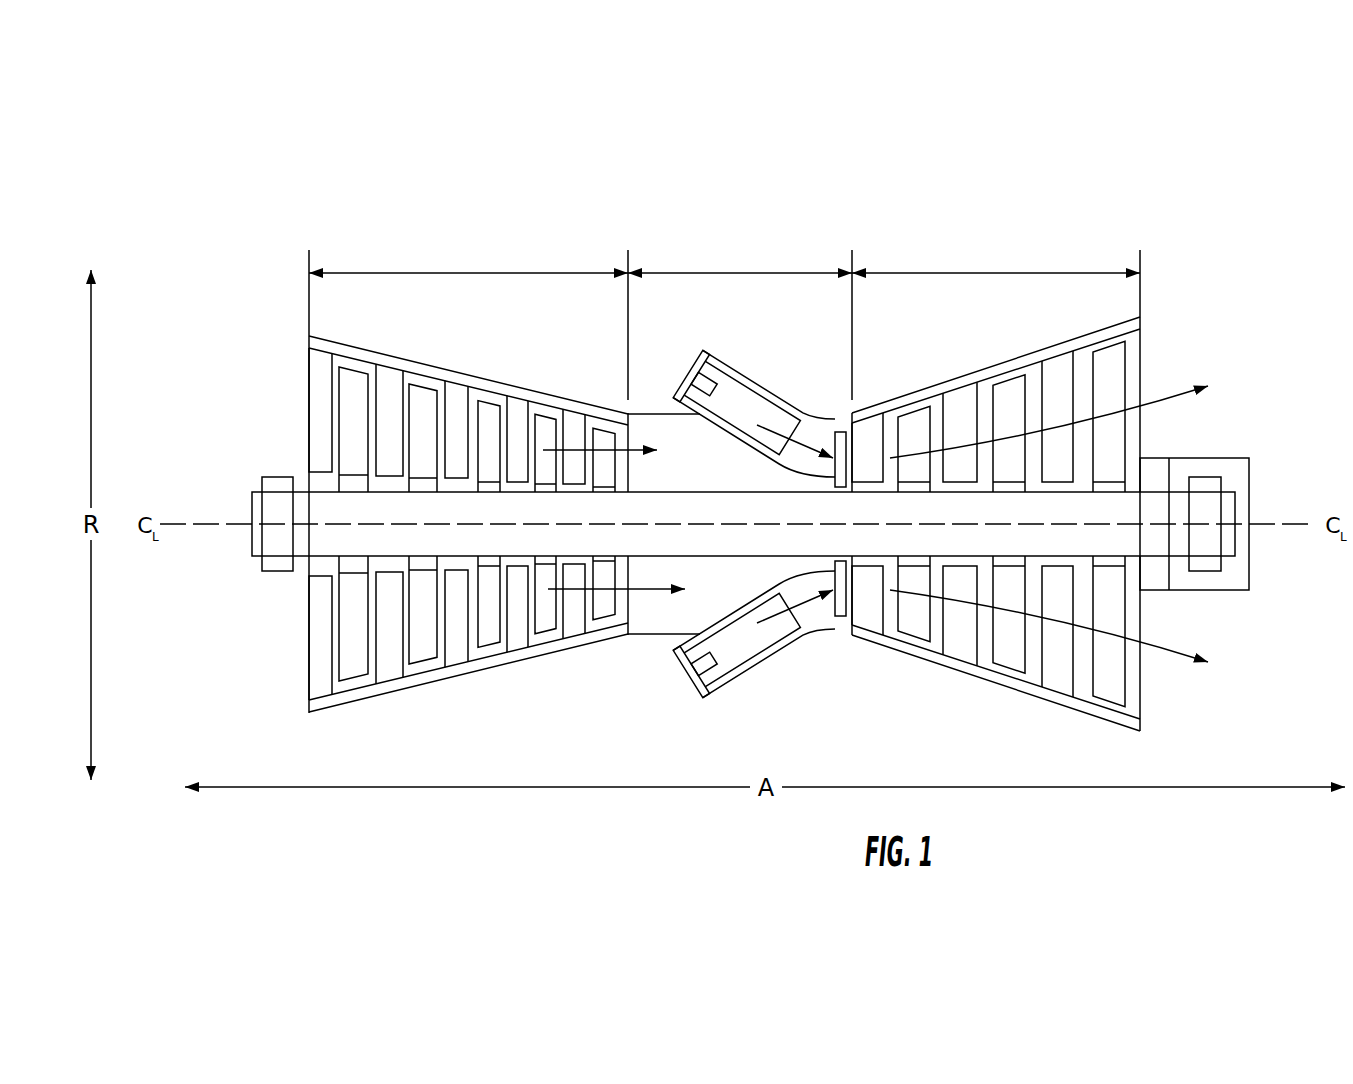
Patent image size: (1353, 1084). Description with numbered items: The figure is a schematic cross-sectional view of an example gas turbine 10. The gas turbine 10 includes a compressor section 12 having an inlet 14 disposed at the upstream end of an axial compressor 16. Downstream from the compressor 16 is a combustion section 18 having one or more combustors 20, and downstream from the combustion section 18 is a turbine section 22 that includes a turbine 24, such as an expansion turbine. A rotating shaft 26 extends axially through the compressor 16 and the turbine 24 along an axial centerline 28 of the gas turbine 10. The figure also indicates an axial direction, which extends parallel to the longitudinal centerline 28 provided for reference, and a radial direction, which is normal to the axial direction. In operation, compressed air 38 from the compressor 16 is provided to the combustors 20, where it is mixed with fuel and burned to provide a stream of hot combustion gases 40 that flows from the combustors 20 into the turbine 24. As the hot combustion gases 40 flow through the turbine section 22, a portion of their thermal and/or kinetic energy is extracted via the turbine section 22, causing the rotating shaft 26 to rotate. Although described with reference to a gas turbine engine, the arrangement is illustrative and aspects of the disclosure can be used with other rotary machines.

The gas turbine 10 is at (682, 177).
The compressor section 12 is at (470, 273).
The inlet 14 is at (309, 402).
The axial compressor 16 is at (327, 713).
The combustion section 18 is at (718, 273).
The combustor 20 is at (720, 357).
The turbine section 22 is at (962, 273).
The turbine 24 is at (974, 678).
The rotating shaft 26 is at (658, 503).
The axial centerline 28 is at (207, 522).
The compressed air 38 is at (573, 447).
The hot combustion gases 40 is at (768, 432).